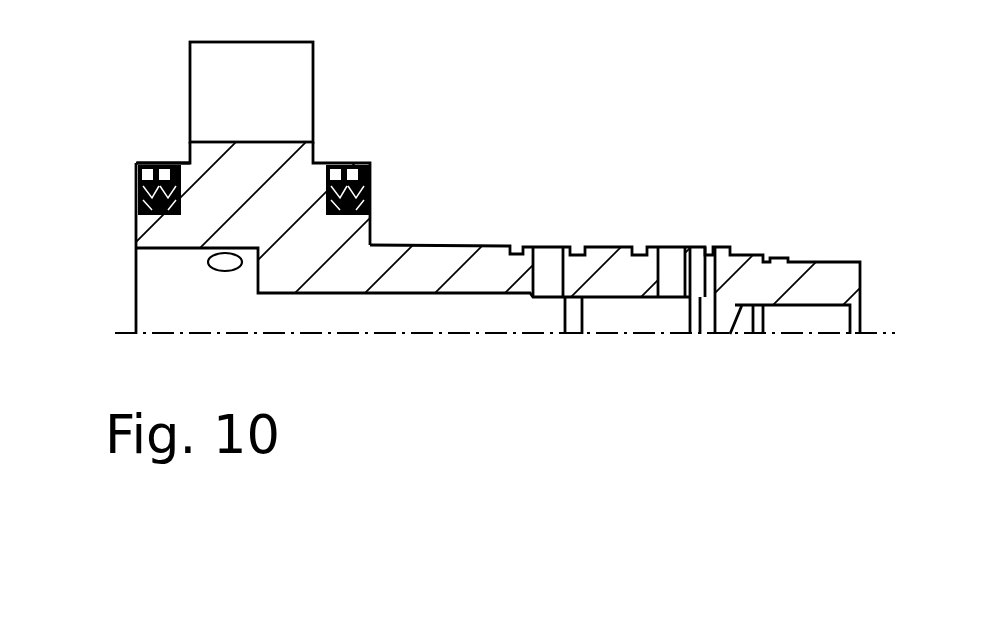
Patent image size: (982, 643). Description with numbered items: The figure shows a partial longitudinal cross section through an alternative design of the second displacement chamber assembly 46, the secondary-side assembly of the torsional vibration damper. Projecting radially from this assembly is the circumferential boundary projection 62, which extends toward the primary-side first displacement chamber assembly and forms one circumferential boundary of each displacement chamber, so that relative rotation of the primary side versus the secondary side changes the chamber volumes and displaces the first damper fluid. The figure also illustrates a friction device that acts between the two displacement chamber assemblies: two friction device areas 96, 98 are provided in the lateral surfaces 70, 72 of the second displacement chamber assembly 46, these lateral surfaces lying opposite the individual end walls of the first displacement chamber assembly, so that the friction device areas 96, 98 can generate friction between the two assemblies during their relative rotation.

The second displacement chamber assembly 46 is at (517, 188).
The circumferential boundary projection 62 is at (278, 80).
The lateral surface 70 is at (137, 230).
The lateral surface 72 is at (370, 243).
The friction device area 96 is at (135, 135).
The friction device area 98 is at (422, 138).